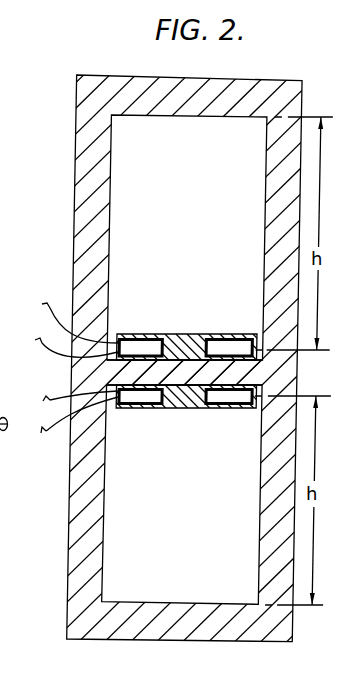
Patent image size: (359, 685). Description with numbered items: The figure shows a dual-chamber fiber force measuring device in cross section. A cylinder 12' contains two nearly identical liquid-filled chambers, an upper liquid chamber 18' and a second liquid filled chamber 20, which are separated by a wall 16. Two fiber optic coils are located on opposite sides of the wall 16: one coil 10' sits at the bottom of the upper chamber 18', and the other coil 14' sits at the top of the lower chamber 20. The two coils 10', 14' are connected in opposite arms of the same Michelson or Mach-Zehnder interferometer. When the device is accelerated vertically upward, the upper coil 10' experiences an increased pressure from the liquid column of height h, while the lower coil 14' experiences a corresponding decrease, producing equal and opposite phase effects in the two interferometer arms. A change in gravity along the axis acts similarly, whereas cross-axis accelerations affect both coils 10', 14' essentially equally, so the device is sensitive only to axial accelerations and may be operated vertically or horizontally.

The cylinder 12' is at (179, 357).
The liquid chamber 18' is at (187, 237).
The liquid filled chamber 20 is at (198, 500).
The wall 16 is at (137, 369).
The coil 10' is at (183, 324).
The coil 14' is at (182, 420).